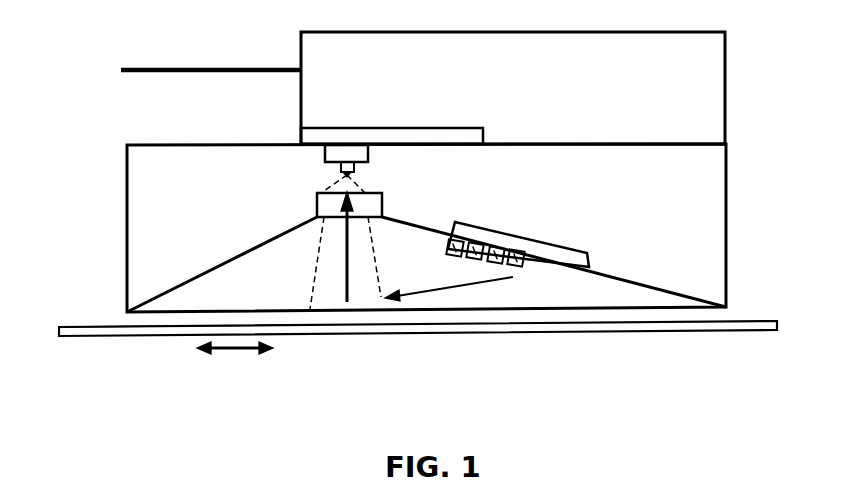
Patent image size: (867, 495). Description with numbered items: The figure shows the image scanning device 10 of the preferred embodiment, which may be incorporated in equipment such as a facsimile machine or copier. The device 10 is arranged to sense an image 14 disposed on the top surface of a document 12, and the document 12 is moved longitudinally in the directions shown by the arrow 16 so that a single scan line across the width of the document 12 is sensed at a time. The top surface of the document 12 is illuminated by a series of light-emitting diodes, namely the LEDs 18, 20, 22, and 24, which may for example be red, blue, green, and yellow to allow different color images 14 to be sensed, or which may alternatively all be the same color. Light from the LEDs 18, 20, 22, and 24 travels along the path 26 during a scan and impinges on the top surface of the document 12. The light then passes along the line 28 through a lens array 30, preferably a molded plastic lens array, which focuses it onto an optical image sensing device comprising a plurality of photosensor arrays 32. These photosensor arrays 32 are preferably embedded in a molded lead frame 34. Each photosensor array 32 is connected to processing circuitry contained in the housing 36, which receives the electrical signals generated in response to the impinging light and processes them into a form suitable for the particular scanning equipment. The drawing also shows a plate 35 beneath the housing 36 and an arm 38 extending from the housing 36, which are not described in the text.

The image scanning device 10 is at (318, 381).
The document 12 is at (152, 338).
The image 14 is at (104, 315).
The arrow 16 is at (237, 351).
The light-emitting diode 18 is at (514, 302).
The light-emitting diode 20 is at (506, 267).
The light-emitting diode 22 is at (487, 262).
The light-emitting diode 24 is at (457, 258).
The path 26 is at (418, 297).
The line 28 is at (345, 228).
The lens array 30 is at (317, 208).
The photosensor arrays 32 is at (342, 167).
The molded lead frame 34 is at (324, 158).
The mounting plate 35 is at (300, 134).
The housing 36 is at (514, 98).
The support arm 38 is at (163, 70).